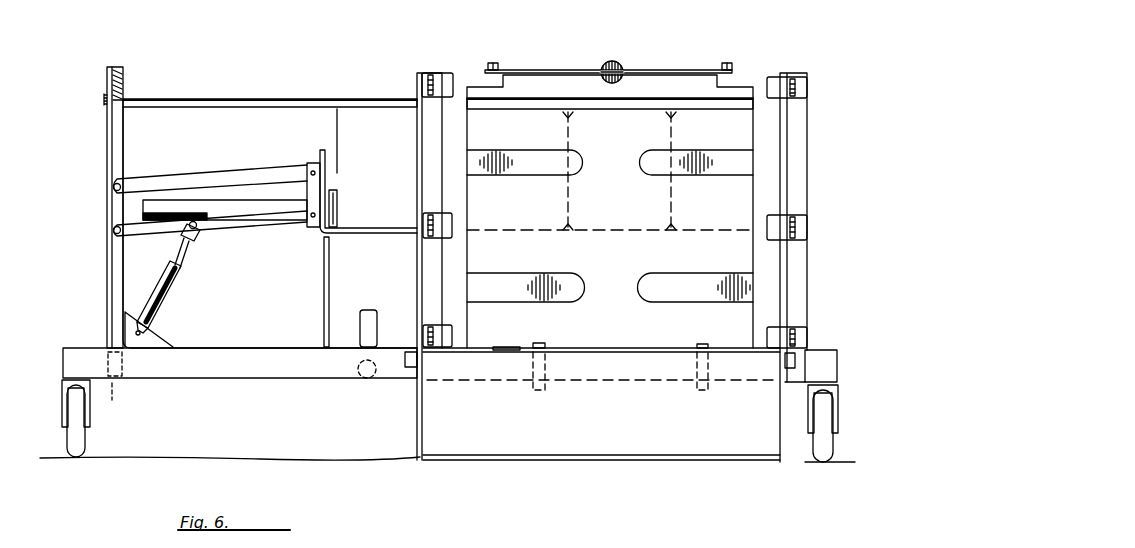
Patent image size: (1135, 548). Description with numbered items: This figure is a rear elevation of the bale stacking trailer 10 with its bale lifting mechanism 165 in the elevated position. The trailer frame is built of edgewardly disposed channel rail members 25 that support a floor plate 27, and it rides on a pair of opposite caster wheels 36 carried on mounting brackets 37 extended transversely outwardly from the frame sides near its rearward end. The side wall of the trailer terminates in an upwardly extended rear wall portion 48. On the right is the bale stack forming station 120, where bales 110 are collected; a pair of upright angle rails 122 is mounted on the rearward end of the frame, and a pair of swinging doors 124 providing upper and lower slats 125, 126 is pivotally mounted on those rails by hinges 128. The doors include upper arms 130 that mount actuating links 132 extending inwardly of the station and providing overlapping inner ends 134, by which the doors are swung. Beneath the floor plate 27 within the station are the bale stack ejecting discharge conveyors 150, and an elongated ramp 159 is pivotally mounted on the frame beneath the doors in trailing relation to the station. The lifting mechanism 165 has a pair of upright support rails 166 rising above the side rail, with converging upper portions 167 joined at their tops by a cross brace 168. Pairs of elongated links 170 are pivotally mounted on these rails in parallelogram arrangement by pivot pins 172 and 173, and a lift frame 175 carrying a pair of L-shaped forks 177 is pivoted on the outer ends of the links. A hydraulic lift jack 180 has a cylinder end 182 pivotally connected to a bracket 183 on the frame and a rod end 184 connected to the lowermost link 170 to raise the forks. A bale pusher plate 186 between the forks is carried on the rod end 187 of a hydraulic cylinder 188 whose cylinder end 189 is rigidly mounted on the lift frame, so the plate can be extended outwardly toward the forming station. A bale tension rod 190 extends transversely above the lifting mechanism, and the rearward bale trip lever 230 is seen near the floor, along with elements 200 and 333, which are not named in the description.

The bale stacking trailer 10 is at (289, 381).
The channel rail member 25 is at (120, 384).
The floor plate 27 is at (270, 347).
The caster wheel 36 is at (85, 440).
The mounting bracket 37 is at (70, 355).
The rear wall portion 48 is at (327, 270).
The bale 110 is at (330, 136).
The bale stack forming station 120 is at (626, 330).
The upright angle rail 122 is at (437, 136).
The swinging door 124 is at (658, 147).
The upper slat 125 is at (652, 165).
The lower slat 126 is at (662, 283).
The hinge 128 is at (439, 75).
The upper arm 130 is at (477, 73).
The actuating link 132 is at (525, 70).
The overlapping inner end 134 is at (609, 62).
The discharge conveyor 150 is at (703, 346).
The ramp 159 is at (432, 408).
The bale lifting mechanism 165 is at (283, 233).
The upright support rail 166 is at (118, 278).
The converging upper portion 167 is at (108, 129).
The cross brace 168 is at (112, 67).
The link 170 is at (237, 198).
The pivot pin 172 is at (113, 189).
The pivot pin 173 is at (113, 231).
The lift frame 175 is at (306, 180).
The fork 177 is at (353, 236).
The hydraulic lift jack 180 is at (168, 298).
The cylinder end 182 is at (158, 318).
The bracket 183 is at (148, 339).
The rod end 184 is at (183, 258).
The bale pusher plate 186 is at (338, 208).
The rod end 187 is at (331, 180).
The hydraulic cylinder 188 is at (197, 200).
The cylinder end 189 is at (160, 199).
The bale tension rod 190 is at (261, 100).
The pivot 200 is at (325, 418).
The rearward bale trip lever 230 is at (358, 378).
The fastener 333 is at (511, 347).